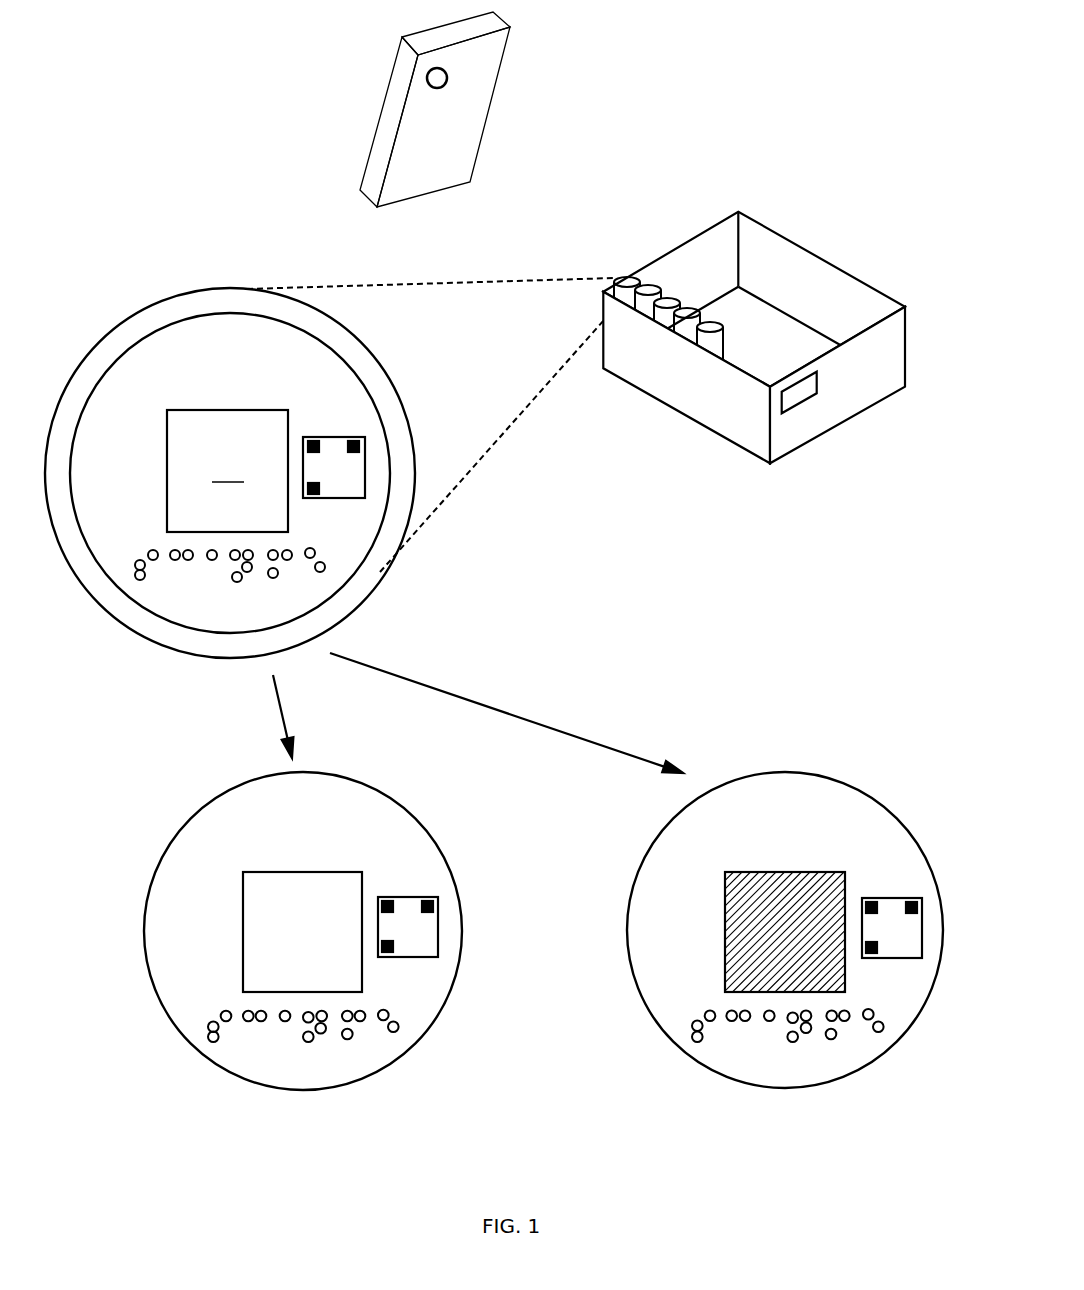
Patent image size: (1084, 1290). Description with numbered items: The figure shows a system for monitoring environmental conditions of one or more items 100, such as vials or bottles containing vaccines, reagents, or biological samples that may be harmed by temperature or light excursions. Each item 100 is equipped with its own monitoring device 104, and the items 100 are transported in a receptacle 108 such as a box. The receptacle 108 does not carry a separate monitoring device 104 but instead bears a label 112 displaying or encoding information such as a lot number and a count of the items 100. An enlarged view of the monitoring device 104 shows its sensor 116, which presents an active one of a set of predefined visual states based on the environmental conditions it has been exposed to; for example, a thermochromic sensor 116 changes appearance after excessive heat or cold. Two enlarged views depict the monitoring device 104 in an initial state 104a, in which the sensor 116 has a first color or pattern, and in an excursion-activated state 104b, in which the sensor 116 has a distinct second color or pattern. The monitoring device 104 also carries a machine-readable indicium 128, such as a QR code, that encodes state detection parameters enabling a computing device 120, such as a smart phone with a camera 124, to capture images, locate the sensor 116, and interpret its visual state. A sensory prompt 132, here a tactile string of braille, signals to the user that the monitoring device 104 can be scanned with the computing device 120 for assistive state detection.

The item 100 is at (197, 290).
The monitoring device 104 is at (152, 316).
The initial state 104a is at (227, 1089).
The excursion-activated state 104b is at (687, 1075).
The receptacle 108 is at (787, 238).
The label 112 is at (797, 403).
The sensor 116 is at (243, 933).
The computing device 120 is at (371, 51).
The camera 124 is at (447, 78).
The machine-readable indicium 128 is at (365, 462).
The sensory prompt 132 is at (173, 567).